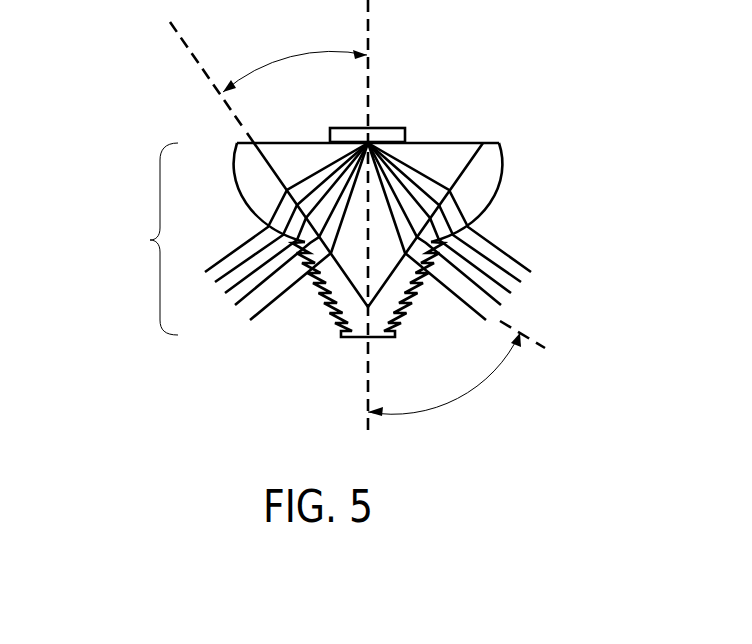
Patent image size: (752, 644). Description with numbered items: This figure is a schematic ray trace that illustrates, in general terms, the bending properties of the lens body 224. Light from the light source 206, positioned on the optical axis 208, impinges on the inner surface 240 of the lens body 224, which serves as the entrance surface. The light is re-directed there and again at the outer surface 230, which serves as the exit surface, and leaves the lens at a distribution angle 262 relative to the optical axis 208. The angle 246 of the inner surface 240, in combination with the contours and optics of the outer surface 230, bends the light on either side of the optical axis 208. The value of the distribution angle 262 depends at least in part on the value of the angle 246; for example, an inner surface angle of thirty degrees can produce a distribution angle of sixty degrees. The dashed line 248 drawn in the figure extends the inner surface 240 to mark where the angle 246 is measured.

The light source 206 is at (392, 128).
The optical axis 208 is at (370, 360).
The lens body 224 is at (148, 240).
The outer surface 230 is at (502, 164).
The inner surface 240 is at (276, 173).
The angle of the inner surface 246 is at (288, 56).
The cavity wall extension line 248 is at (188, 52).
The distribution angle 262 is at (468, 394).